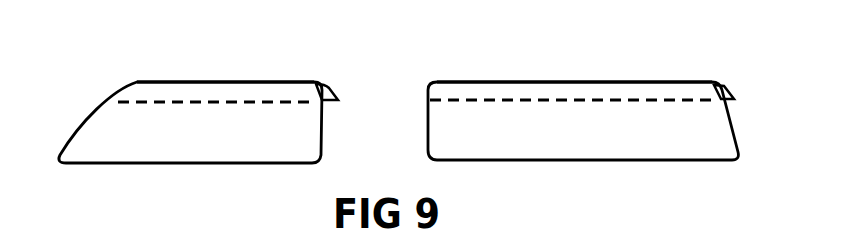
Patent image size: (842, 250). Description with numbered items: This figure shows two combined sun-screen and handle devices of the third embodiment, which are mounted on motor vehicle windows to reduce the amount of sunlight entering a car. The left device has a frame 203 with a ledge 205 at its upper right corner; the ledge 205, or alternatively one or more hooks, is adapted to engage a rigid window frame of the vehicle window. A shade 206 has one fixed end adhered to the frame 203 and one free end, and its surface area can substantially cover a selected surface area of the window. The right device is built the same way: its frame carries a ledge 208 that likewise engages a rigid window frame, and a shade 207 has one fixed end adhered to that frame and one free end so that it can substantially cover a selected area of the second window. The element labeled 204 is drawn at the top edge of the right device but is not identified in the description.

The frame 203 is at (188, 82).
The top surface of second member 204 is at (538, 82).
The ledge 205 is at (332, 87).
The shade 206 is at (190, 122).
The shade 207 is at (583, 121).
The ledge 208 is at (722, 85).